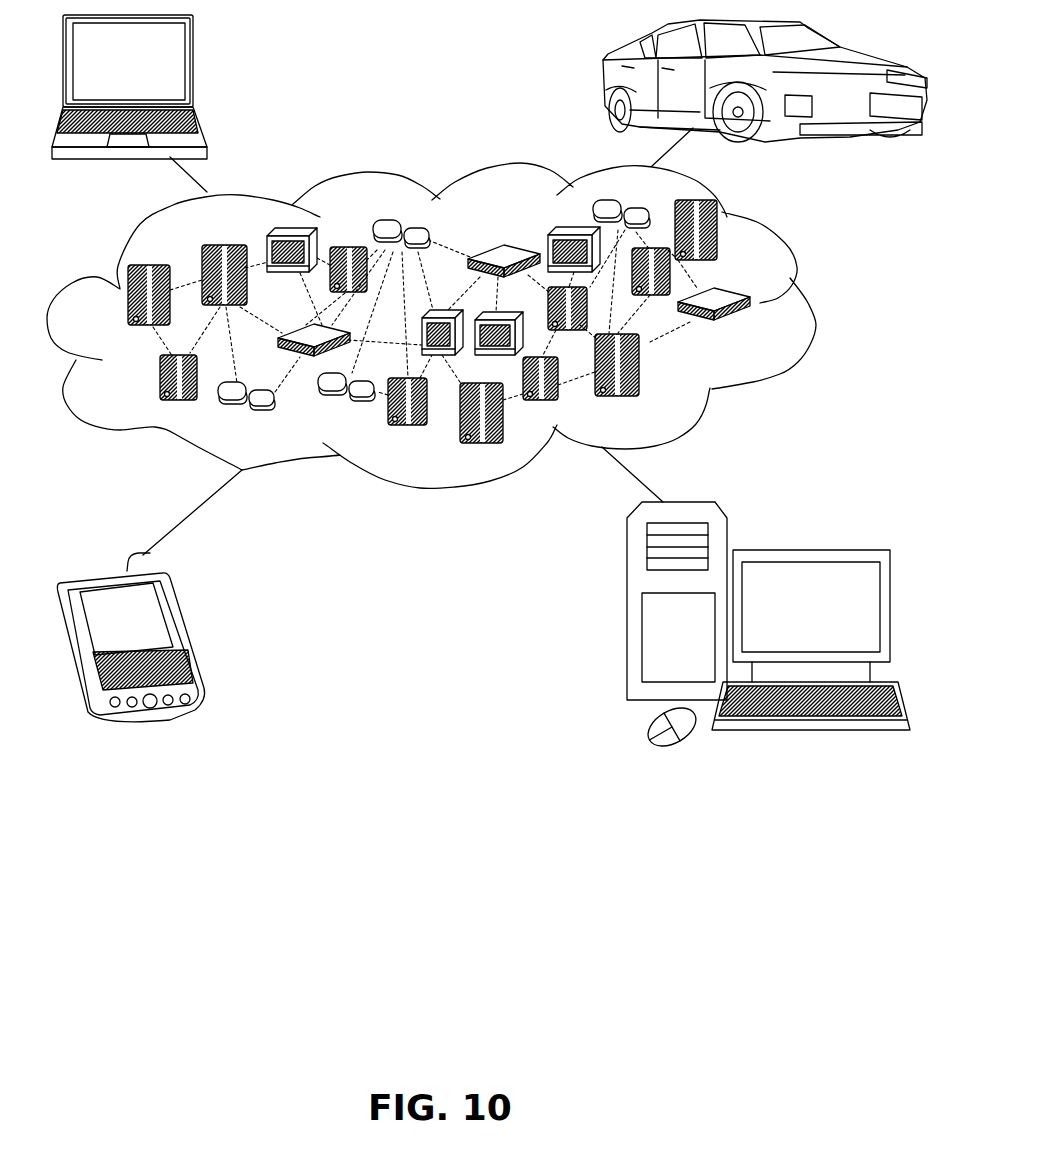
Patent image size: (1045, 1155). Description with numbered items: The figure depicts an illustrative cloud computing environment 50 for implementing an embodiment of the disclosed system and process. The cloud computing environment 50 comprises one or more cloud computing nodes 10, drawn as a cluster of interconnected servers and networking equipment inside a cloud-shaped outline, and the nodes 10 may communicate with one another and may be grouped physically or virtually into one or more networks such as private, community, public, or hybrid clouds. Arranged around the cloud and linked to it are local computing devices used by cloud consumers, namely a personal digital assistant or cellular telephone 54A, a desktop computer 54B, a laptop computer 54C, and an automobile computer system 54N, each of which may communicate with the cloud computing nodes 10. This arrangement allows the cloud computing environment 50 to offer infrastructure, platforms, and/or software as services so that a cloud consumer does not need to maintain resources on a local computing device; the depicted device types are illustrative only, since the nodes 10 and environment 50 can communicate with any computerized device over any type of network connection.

The cloud computing nodes 10 is at (782, 348).
The cloud computing environment 50 is at (809, 305).
The cellular telephone 54A is at (183, 633).
The desktop computer 54B is at (830, 548).
The laptop computer 54C is at (195, 60).
The automobile computer system 54N is at (598, 78).